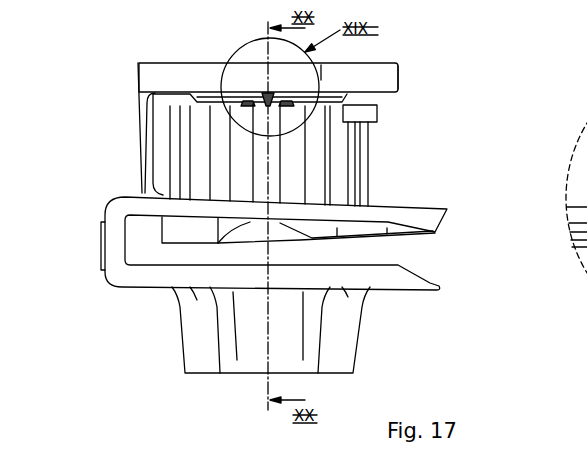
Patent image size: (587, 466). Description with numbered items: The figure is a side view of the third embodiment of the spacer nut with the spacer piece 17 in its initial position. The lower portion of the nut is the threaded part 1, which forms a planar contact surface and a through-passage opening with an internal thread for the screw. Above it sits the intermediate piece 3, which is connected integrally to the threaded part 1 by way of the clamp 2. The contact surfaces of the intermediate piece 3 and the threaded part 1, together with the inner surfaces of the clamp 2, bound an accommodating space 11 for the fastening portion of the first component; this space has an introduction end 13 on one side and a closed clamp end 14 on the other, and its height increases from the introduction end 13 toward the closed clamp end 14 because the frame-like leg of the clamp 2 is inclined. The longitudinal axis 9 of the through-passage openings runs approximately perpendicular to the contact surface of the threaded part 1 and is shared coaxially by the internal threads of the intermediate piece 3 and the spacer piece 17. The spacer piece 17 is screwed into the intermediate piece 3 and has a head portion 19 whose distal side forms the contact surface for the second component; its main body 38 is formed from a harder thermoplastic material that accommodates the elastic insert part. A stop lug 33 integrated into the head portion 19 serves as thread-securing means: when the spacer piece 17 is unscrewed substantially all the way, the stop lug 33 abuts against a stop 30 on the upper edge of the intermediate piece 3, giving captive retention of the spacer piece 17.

The threaded part 1 is at (342, 338).
The clamp 2 is at (132, 273).
The intermediate piece 3 is at (342, 160).
The longitudinal axis 9 is at (268, 407).
The accommodating space 11 is at (151, 250).
The introduction end 13 is at (429, 250).
The closed clamp end 14 is at (126, 233).
The spacer piece 17 is at (139, 78).
The head portion 19 is at (401, 84).
The stop 30 is at (379, 110).
The stop lug 33 is at (143, 157).
The main body 38 is at (390, 78).